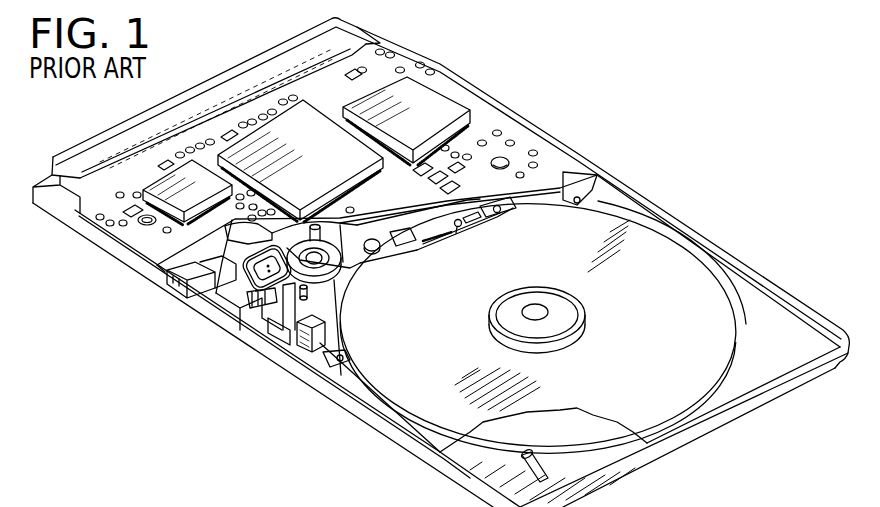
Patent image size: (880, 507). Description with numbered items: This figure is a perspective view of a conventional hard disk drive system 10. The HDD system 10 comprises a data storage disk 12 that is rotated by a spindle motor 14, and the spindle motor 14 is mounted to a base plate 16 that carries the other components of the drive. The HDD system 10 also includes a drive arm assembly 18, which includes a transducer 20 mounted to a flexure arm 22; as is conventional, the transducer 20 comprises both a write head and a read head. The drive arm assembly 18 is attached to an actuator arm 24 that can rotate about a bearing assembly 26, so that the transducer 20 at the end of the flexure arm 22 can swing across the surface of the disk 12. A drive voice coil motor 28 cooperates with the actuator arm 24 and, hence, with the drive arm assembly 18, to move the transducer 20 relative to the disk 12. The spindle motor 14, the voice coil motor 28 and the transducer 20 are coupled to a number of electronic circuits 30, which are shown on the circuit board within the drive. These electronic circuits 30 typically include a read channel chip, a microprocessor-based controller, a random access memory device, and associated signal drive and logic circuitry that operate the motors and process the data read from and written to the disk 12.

The hard disk drive system 10 is at (581, 132).
The data storage disk 12 is at (706, 280).
The spindle motor 14 is at (588, 318).
The base plate 16 is at (765, 323).
The drive arm assembly 18 is at (472, 239).
The transducer 20 is at (510, 207).
The flexure arm 22 is at (418, 243).
The actuator arm 24 is at (357, 262).
The bearing assembly 26 is at (340, 277).
The voice coil motor 28 is at (247, 290).
The electronic circuits 30 is at (213, 203).